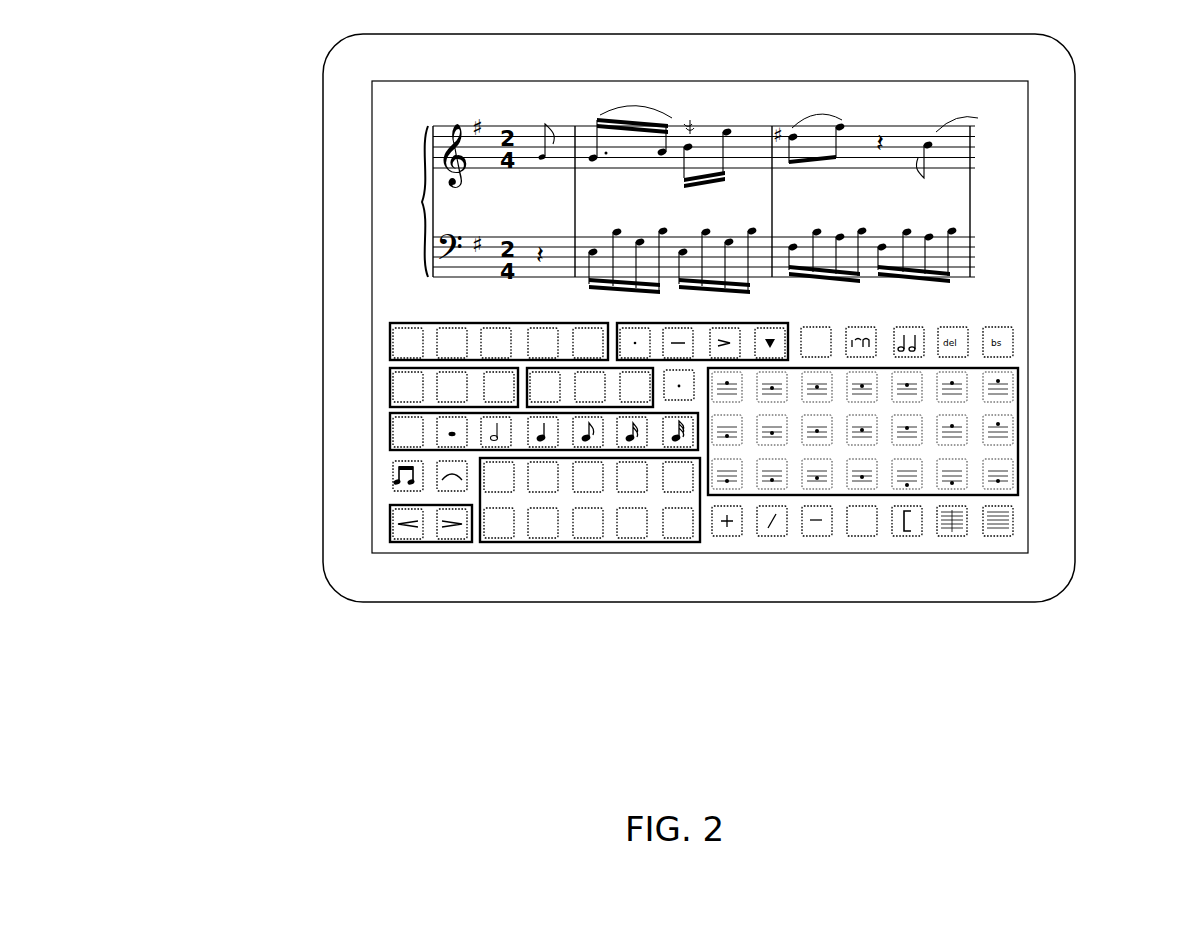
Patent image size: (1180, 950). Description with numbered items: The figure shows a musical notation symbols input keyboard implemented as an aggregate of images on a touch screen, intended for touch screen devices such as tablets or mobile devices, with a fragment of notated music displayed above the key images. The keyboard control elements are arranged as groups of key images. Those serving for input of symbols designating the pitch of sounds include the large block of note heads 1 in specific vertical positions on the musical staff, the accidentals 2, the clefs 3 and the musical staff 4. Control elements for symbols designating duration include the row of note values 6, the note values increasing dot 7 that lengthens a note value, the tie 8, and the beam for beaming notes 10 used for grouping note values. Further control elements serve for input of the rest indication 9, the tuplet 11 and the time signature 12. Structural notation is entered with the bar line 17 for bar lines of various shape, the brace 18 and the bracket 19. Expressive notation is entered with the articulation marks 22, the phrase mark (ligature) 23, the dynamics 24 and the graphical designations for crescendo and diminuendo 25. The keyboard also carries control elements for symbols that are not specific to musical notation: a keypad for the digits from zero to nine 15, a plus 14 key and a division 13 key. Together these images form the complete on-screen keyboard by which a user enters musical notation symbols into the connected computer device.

The note heads 1 is at (1018, 432).
The accidentals 2 is at (527, 378).
The clefs 3 is at (390, 403).
The musical staff 4 is at (1013, 512).
The note values 6 is at (390, 428).
The note values increasing dot 7 is at (667, 403).
The tie 8 is at (900, 357).
The rest indication 9 is at (830, 327).
The beam for beaming notes 10 is at (393, 490).
The tuplet 11 is at (877, 327).
The time signature 12 is at (828, 538).
The division 13 is at (783, 538).
The plus 14 is at (738, 538).
The digits from 0 to 9 15 is at (590, 542).
The bar line 17 is at (963, 538).
The brace 18 is at (873, 538).
The bracket 19 is at (918, 538).
The articulation marks 22 is at (617, 323).
The phrase mark (ligature) 23 is at (440, 460).
The dynamics 24 is at (390, 340).
The graphical designations for crescendo and diminuendo 25 is at (432, 542).